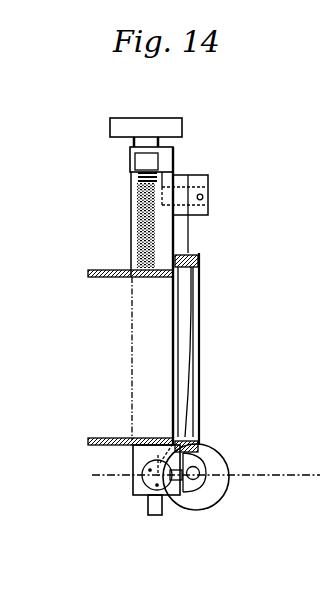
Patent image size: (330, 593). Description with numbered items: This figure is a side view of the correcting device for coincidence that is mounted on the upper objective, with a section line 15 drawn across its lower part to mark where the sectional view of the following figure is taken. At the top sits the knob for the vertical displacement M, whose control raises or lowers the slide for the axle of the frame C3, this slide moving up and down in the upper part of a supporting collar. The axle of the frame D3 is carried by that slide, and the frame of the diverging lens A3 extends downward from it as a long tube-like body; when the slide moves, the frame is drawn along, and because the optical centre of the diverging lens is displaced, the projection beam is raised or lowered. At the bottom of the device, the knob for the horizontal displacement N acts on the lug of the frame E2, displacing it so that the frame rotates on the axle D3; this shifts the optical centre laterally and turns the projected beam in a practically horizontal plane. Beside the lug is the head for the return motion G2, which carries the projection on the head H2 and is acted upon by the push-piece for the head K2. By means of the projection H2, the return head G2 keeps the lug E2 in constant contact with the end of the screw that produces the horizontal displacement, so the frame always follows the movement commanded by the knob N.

The knob for the vertical displacement M is at (163, 132).
The axle of the frame D3 is at (165, 197).
The slide for the axle of the frame C3 is at (158, 225).
The frame of the diverging lens A3 is at (177, 250).
The head for the return motion G2 is at (150, 468).
The projection on the head H2 is at (170, 473).
The section line 15 is at (196, 479).
The push-piece for the head K2 is at (155, 508).
The lug of the frame E2 is at (199, 470).
The knob for the horizontal displacement N is at (215, 493).